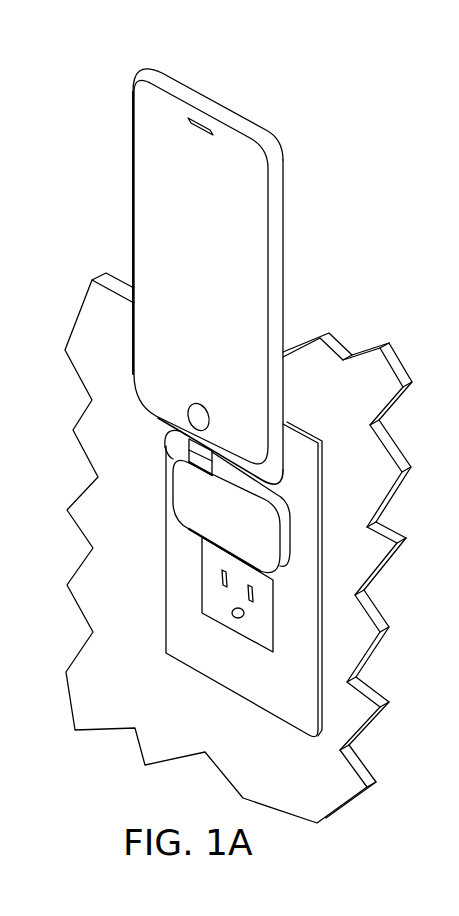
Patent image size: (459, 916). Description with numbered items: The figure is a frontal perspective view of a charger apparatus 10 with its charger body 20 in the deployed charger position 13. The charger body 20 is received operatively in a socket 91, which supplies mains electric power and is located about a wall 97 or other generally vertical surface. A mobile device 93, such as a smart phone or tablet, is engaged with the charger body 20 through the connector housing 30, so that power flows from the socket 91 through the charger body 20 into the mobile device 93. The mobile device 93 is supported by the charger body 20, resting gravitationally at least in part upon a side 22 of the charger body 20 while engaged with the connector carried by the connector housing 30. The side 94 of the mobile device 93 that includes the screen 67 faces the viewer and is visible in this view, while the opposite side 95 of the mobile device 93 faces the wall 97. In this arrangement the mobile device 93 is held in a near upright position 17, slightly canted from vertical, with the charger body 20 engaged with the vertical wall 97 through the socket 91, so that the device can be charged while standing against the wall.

The charger apparatus 10 is at (209, 286).
The deployed charger position 13 is at (216, 242).
The near upright position 17 is at (244, 86).
The charger body 20 is at (195, 508).
The side 22 is at (244, 492).
The connector housing 30 is at (163, 433).
The screen 67 is at (152, 153).
The socket 91 is at (210, 587).
The mobile device 93 is at (279, 199).
The side 94 is at (168, 127).
The side 95 is at (283, 268).
The wall 97 is at (343, 382).